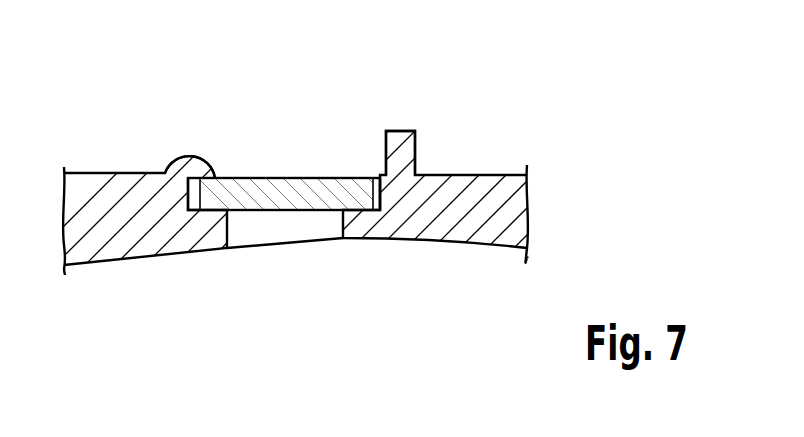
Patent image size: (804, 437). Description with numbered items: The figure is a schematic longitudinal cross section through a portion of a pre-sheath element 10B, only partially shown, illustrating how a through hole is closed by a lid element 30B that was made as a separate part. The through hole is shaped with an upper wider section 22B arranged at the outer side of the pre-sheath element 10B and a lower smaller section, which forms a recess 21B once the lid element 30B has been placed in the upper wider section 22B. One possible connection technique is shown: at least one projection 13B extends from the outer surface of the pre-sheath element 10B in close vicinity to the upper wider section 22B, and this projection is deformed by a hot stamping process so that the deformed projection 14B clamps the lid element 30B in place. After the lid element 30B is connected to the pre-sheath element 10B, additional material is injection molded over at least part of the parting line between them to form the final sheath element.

The pre-sheath element 10B is at (512, 213).
The projection 13B is at (405, 142).
The deformed projection 14B is at (188, 162).
The recess 21B is at (298, 228).
The upper wider section 22B is at (378, 196).
The lid element 30B is at (289, 198).